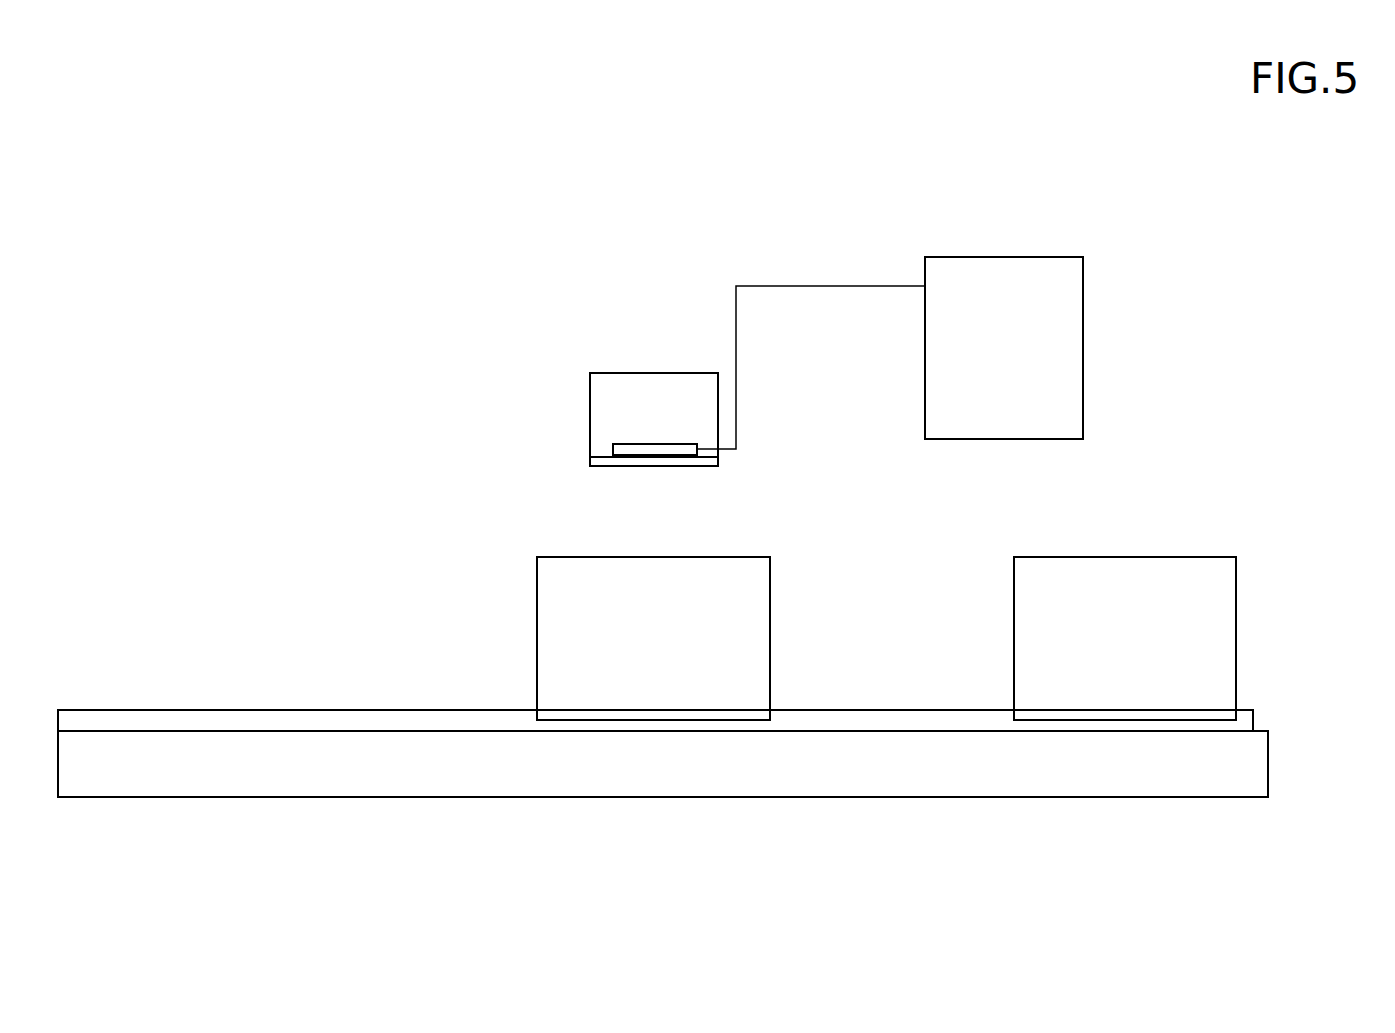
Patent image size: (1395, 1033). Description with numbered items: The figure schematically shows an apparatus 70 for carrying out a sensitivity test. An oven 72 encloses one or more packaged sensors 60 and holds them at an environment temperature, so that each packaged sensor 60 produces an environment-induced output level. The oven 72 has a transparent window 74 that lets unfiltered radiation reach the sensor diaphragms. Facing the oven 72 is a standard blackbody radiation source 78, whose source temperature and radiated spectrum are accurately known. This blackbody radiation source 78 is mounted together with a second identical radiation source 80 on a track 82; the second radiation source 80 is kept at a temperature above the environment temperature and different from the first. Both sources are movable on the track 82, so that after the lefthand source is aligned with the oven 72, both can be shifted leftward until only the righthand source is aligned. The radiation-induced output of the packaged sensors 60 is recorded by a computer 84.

The apparatus 70 is at (383, 218).
The oven 72 is at (603, 406).
The packaged sensor 60 is at (625, 450).
The transparent window 74 is at (708, 461).
The computer 84 is at (1070, 364).
The blackbody radiation source 78 is at (672, 637).
The second radiation source 80 is at (1145, 642).
The track 82 is at (219, 714).